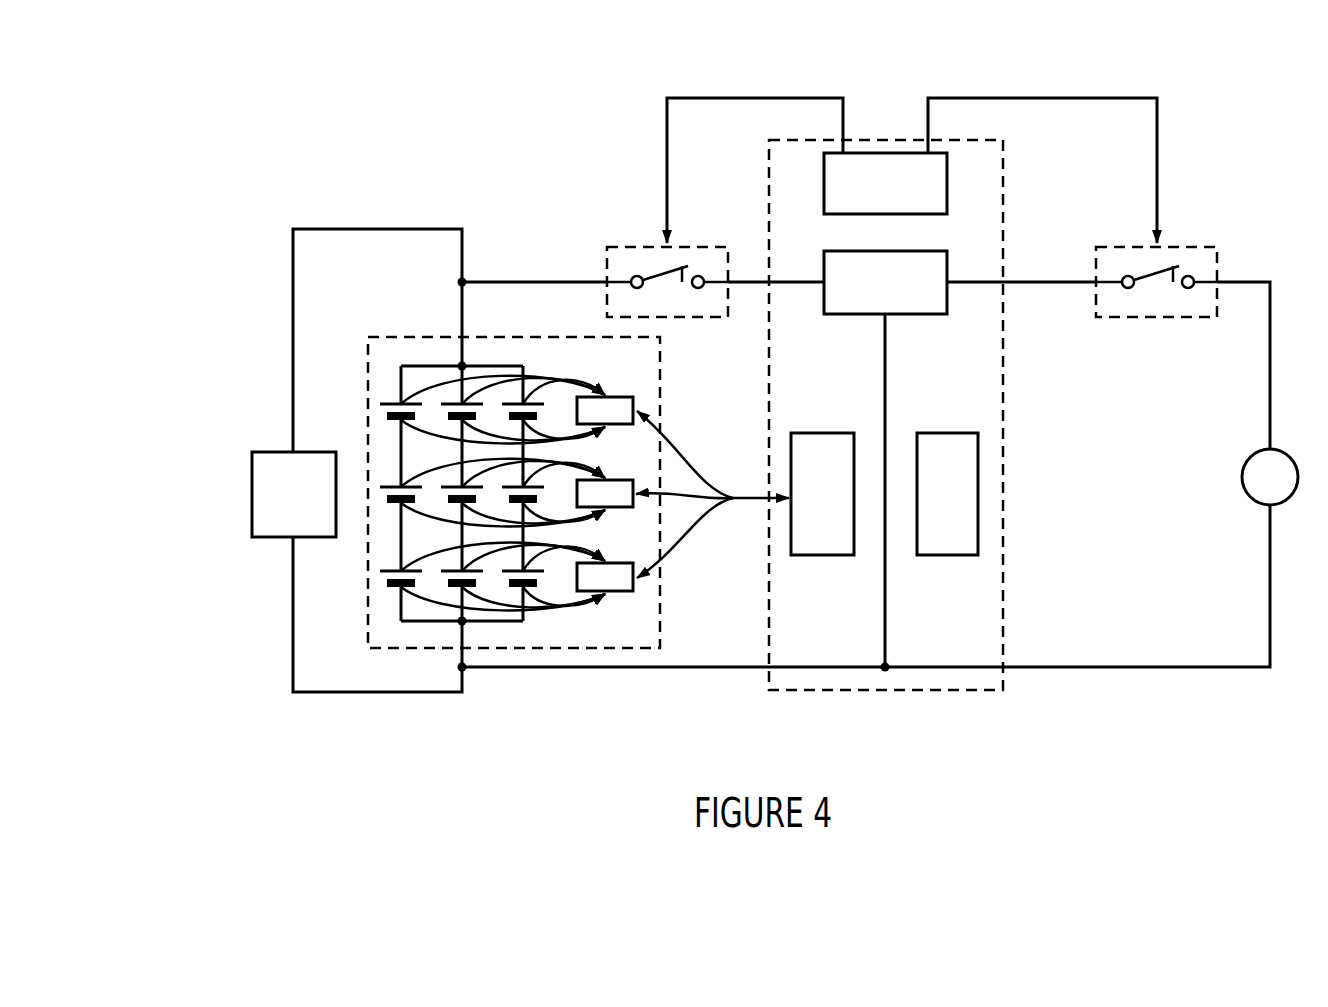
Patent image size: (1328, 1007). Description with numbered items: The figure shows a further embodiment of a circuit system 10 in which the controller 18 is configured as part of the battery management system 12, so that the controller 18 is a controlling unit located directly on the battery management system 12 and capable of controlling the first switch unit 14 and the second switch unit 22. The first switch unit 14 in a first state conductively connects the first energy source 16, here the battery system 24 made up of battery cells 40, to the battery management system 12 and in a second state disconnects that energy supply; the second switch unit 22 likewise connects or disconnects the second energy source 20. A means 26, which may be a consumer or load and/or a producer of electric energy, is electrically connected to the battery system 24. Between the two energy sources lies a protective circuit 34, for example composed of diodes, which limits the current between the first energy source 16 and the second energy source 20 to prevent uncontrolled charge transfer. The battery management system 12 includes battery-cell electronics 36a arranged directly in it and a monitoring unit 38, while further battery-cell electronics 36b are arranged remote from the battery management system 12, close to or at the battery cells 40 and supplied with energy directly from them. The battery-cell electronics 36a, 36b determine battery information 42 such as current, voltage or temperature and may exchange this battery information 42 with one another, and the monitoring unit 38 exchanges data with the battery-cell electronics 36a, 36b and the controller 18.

The circuit system 10 is at (374, 98).
The battery management system 12 is at (887, 690).
The first switch unit 14 is at (640, 246).
The first energy source 16 is at (405, 337).
The battery system 24 is at (514, 492).
The controller 18 is at (883, 152).
The second energy source 20 is at (1242, 477).
The second switch unit 22 is at (1162, 318).
The means electrically connected to the battery system 26 is at (252, 493).
The protective circuit 34 is at (922, 316).
The battery-cell electronics 36a is at (826, 556).
The battery-cell electronics 36b is at (612, 509).
The monitoring unit 38 is at (948, 556).
The battery cells 40 is at (397, 487).
The battery information 42 is at (733, 502).